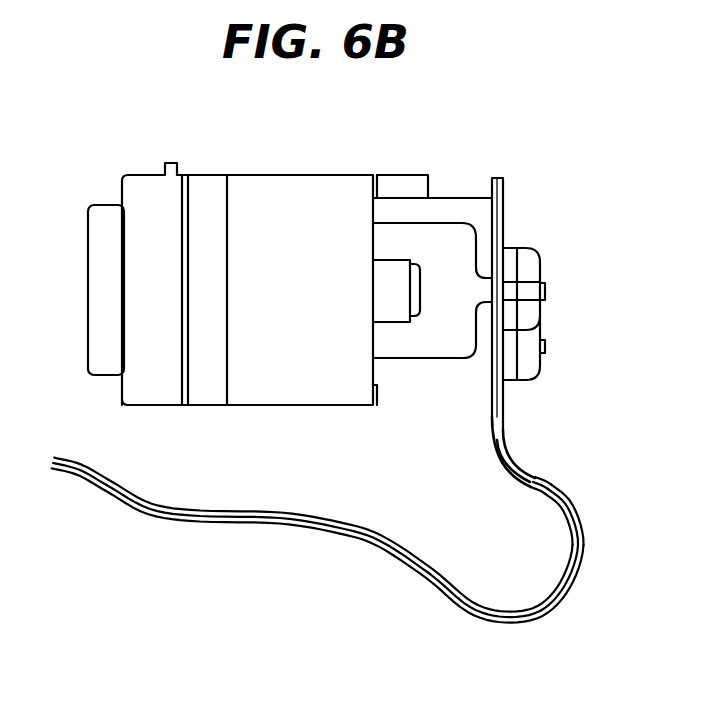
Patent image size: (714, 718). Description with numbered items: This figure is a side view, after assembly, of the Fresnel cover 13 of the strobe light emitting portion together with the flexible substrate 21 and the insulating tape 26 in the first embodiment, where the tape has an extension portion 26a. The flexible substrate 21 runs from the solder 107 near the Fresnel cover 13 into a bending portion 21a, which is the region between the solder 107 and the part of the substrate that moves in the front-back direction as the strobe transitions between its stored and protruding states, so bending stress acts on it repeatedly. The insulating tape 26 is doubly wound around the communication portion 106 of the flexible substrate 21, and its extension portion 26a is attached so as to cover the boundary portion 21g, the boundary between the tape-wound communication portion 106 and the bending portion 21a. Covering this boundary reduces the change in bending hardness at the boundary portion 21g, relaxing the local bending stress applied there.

The Fresnel cover 13 is at (293, 176).
The flexible substrate 21 is at (494, 177).
The solder 107 is at (512, 247).
The bending portion 21a is at (500, 462).
The extension portion 26a is at (506, 440).
The boundary portion 21g is at (534, 478).
The insulating tape 26 is at (380, 545).
The communication portion 106 is at (432, 578).